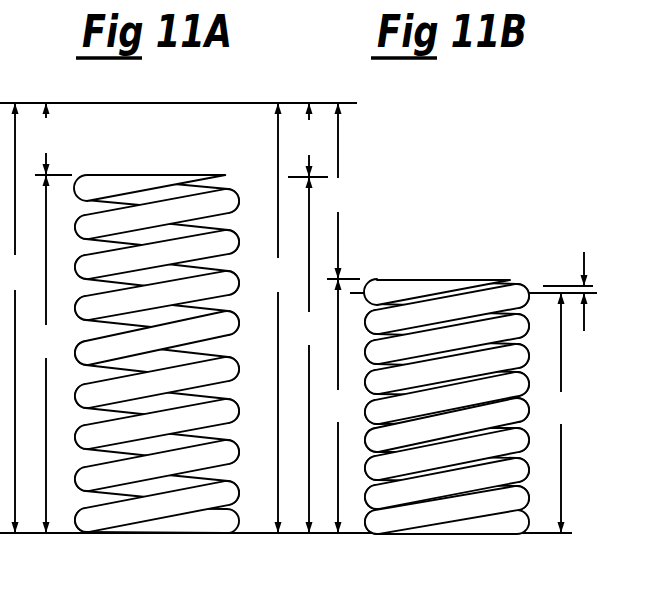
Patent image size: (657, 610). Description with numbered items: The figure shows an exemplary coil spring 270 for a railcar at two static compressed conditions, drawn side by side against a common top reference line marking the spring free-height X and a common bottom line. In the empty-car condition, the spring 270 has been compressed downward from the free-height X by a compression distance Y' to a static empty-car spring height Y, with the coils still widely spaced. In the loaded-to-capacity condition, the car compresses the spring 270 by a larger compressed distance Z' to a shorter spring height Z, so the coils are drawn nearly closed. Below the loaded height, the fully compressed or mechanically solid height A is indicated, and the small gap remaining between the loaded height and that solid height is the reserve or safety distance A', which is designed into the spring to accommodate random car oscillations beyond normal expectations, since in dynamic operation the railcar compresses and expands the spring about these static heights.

In FIG. 11A, the spring 270 is at (183, 524).
In FIG. 11B, the spring 270 is at (418, 524).
In FIG. 11A, the spring free-height X is at (14, 318).
In FIG. 11B, the spring free-height X is at (277, 318).
In FIG. 11A, the compression distance Y' is at (53, 139).
In FIG. 11B, the compression distance Y' is at (308, 140).
In FIG. 11A, the static empty-car spring height Y is at (47, 354).
In FIG. 11B, the static empty-car spring height Y is at (312, 355).
In FIG. 11B, the compressed distance Z' is at (343, 191).
In FIG. 11B, the spring height at loaded-to-capacity condition Z is at (338, 406).
In FIG. 11B, the reserve or safety distance A' is at (586, 277).
In FIG. 11B, the fully compressed or mechanically solid height A is at (560, 413).